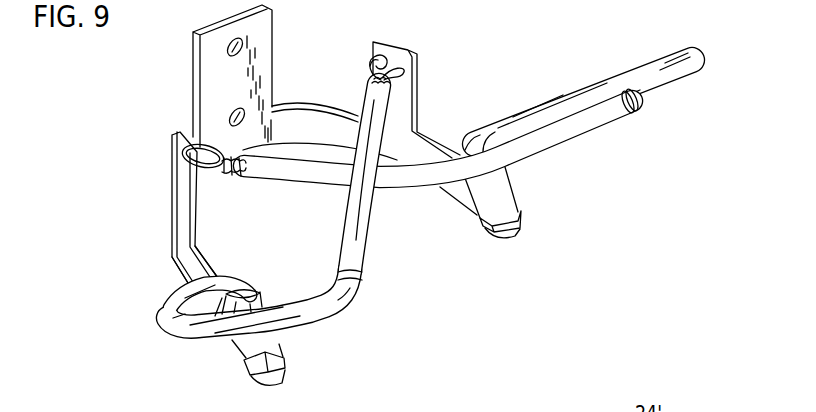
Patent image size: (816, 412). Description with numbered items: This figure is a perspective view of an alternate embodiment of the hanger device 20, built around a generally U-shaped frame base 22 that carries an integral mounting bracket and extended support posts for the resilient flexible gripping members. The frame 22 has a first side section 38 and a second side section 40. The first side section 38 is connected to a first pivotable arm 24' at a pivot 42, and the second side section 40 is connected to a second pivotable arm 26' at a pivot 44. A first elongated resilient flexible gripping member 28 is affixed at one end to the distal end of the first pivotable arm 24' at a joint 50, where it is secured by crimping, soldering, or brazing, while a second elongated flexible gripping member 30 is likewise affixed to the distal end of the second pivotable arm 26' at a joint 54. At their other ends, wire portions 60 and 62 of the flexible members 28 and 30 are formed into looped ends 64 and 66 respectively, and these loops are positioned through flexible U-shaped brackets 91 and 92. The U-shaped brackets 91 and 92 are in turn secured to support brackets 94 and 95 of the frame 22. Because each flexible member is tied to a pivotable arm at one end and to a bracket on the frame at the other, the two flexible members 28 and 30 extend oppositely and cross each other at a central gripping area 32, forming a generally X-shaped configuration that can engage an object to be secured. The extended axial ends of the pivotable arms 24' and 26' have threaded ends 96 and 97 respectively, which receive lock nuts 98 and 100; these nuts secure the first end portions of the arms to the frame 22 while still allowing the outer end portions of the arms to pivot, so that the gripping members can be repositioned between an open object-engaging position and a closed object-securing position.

The hanger device 20 is at (255, 150).
The frame base 22 is at (276, 50).
The first pivotable arm 24' is at (583, 95).
The second pivotable arm 26' is at (235, 327).
The first elongated flexible gripping member 28 is at (598, 140).
The second elongated flexible gripping member 30 is at (374, 262).
The central gripping area 32 is at (383, 196).
The first side section 38 is at (445, 145).
The second side section 40 is at (192, 280).
The pivot 42 is at (512, 190).
The pivot 44 is at (240, 343).
The joint 50 is at (631, 110).
The joint 54 is at (340, 278).
The wire portion 60 is at (230, 176).
The wire portion 62 is at (395, 85).
The looped end 64 is at (390, 62).
The looped end 66 is at (187, 141).
The U-shaped bracket 91 is at (208, 134).
The U-shaped bracket 92 is at (359, 61).
The support bracket 94 is at (183, 212).
The support bracket 95 is at (418, 80).
The threaded end 96 is at (512, 237).
The threaded end 97 is at (276, 384).
The lock nut 98 is at (520, 215).
The lock nut 100 is at (285, 357).